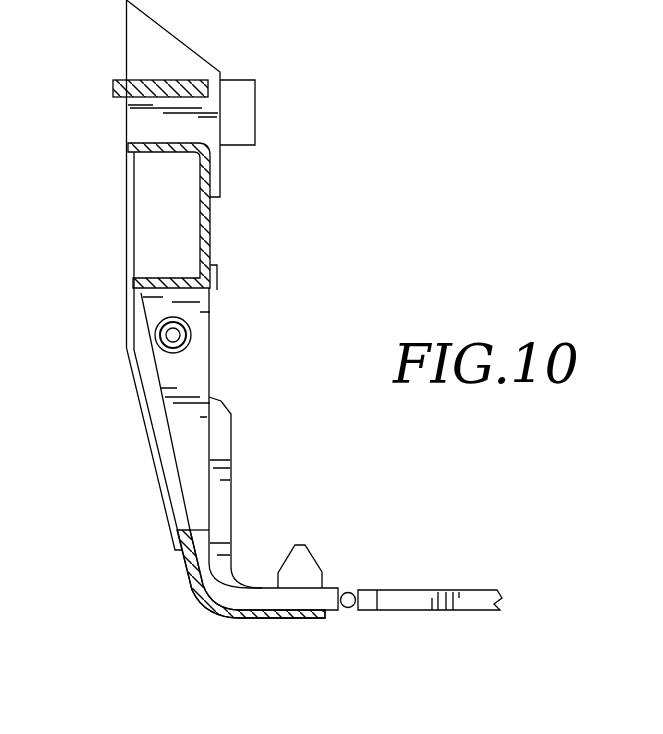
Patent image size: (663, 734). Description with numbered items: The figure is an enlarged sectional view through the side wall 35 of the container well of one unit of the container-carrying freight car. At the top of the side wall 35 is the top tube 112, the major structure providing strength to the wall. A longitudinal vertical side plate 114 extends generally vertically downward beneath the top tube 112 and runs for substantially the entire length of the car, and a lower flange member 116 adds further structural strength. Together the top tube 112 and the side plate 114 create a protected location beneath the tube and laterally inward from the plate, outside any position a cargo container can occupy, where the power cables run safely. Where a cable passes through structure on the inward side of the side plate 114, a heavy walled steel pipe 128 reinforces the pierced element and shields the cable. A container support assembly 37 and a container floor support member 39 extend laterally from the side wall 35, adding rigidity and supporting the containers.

The side wall 35 is at (120, 315).
The top tube 112 is at (210, 222).
The heavy walled steel pipe 128 is at (192, 337).
The side plate 114 is at (150, 425).
The lower flange member 116 is at (268, 620).
The container support assembly 37 is at (255, 588).
The container floor support member 39 is at (427, 588).